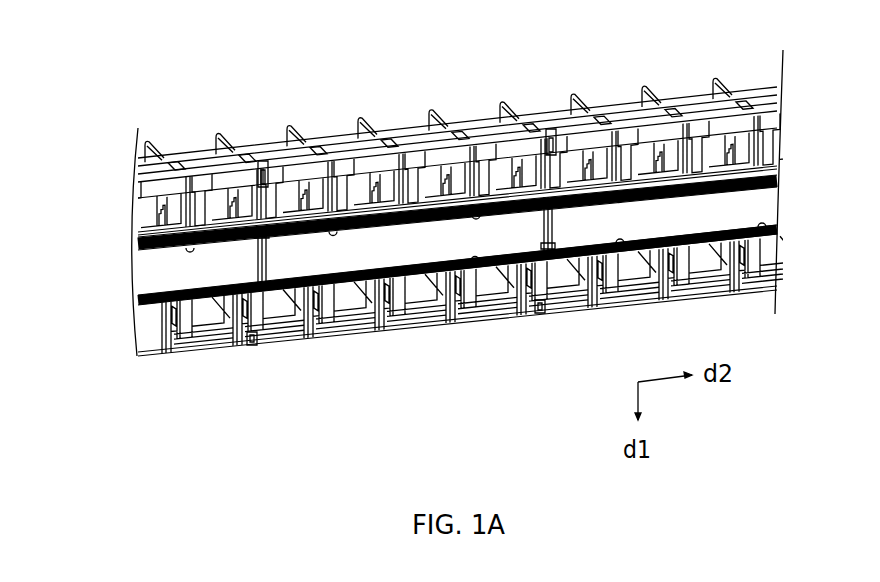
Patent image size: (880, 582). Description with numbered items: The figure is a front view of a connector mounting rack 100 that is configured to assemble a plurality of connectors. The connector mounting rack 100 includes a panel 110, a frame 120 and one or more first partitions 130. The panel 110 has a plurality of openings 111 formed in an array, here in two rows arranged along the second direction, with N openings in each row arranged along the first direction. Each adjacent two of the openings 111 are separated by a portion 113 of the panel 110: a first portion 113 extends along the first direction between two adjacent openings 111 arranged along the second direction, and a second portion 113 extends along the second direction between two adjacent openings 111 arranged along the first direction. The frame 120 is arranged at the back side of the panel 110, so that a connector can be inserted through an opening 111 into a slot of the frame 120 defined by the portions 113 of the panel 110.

The connector mounting rack 100 is at (138, 47).
The panel 110 is at (562, 122).
The openings 111 is at (355, 296).
The portion of the panel 113 is at (406, 160).
The frame 120 is at (273, 141).
The first partitions 130 is at (448, 111).